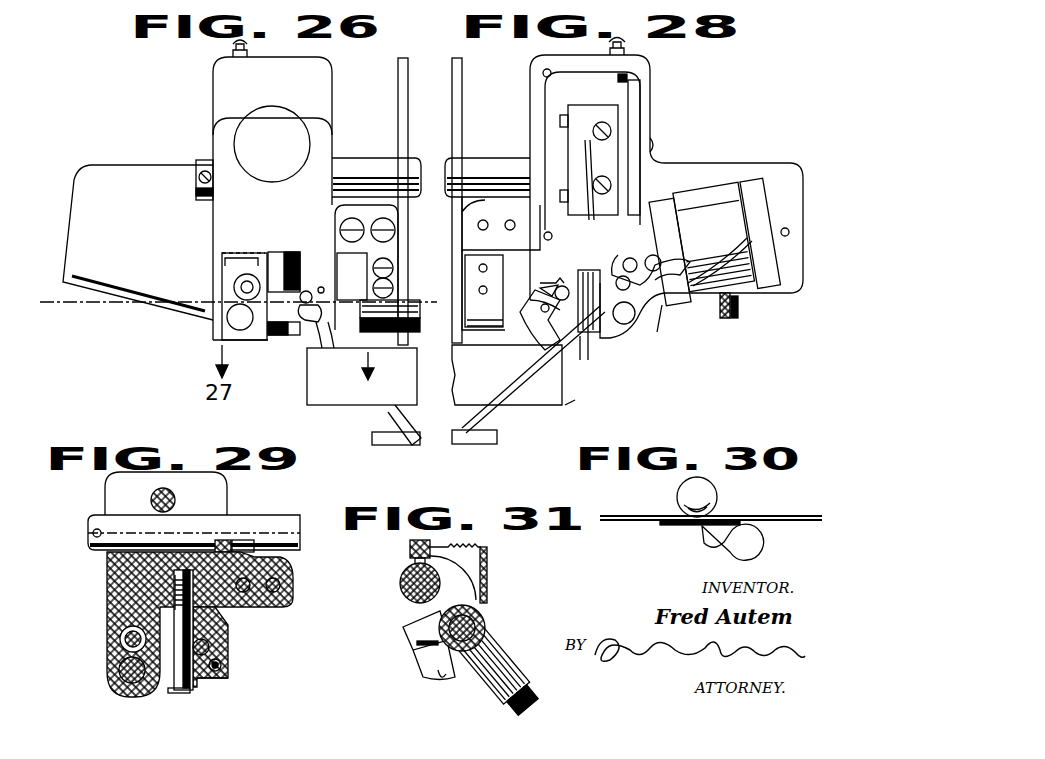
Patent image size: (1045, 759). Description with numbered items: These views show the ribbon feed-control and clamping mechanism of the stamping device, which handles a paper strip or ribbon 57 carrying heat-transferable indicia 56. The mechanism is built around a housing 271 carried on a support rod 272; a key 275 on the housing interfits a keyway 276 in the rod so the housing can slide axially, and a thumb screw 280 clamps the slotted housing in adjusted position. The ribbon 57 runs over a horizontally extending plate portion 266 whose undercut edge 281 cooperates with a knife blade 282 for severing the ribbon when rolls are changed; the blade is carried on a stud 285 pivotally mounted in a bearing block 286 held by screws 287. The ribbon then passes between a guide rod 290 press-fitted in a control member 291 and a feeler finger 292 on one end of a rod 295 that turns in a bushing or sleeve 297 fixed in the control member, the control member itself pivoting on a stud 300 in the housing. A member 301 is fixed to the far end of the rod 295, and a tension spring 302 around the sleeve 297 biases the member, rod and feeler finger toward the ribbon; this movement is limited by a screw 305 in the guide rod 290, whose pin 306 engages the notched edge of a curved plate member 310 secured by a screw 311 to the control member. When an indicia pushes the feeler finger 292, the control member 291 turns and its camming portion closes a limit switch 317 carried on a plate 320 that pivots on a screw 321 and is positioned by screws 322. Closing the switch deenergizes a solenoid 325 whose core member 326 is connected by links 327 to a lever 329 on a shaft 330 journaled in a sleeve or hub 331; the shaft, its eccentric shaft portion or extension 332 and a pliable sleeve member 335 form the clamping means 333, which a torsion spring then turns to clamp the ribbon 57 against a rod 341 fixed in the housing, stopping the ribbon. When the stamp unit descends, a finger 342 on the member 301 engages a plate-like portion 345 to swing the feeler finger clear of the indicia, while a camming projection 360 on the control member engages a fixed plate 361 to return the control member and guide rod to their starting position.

In FIG. 30, the indicia 56 is at (667, 525).
In FIG. 26, the paper strip or ribbon 57 is at (100, 305).
In FIG. 30, the paper strip or ribbon 57 is at (782, 517).
In FIG. 26, the plate portion 266 is at (398, 292).
In FIG. 26, the housing 271 is at (213, 95).
In FIG. 28, the housing 271 is at (650, 72).
In FIG. 29, the housing 271 is at (107, 594).
In FIG. 26, the support rod 272 is at (360, 158).
In FIG. 28, the support rod 272 is at (492, 158).
In FIG. 29, the support rod 272 is at (88, 536).
In FIG. 29, the key 275 is at (222, 540).
In FIG. 29, the keyway 276 is at (248, 540).
In FIG. 26, the thumb screw 280 is at (300, 113).
In FIG. 29, the thumb screw 280 is at (150, 497).
In FIG. 26, the undercut edge 281 is at (395, 300).
In FIG. 26, the knife blade 282 is at (398, 110).
In FIG. 28, the knife blade 282 is at (462, 80).
In FIG. 26, the stud 285 is at (358, 312).
In FIG. 28, the stud 285 is at (500, 350).
In FIG. 26, the bearing block 286 is at (385, 366).
In FIG. 28, the bearing block 286 is at (465, 270).
In FIG. 26, the screws 287 is at (372, 267).
In FIG. 28, the screws 287 is at (484, 291).
In FIG. 26, the guide rod 290 is at (308, 291).
In FIG. 28, the guide rod 290 is at (566, 300).
In FIG. 29, the guide rod 290 is at (208, 640).
In FIG. 31, the guide rod 290 is at (400, 586).
In FIG. 30, the guide rod 290 is at (718, 497).
In FIG. 26, the control member 291 is at (284, 262).
In FIG. 29, the control member 291 is at (225, 680).
In FIG. 26, the feeler finger 292 is at (305, 340).
In FIG. 30, the feeler finger 292 is at (714, 550).
In FIG. 29, the rod 295 is at (225, 670).
In FIG. 31, the rod 295 is at (470, 628).
In FIG. 29, the bushing or sleeve 297 is at (222, 662).
In FIG. 31, the bushing or sleeve 297 is at (470, 618).
In FIG. 26, the stud 300 is at (278, 337).
In FIG. 28, the stud 300 is at (588, 335).
In FIG. 29, the stud 300 is at (192, 688).
In FIG. 28, the member 301 is at (540, 355).
In FIG. 31, the member 301 is at (410, 660).
In FIG. 31, the tension spring 302 is at (442, 678).
In FIG. 31, the screw 305 is at (410, 543).
In FIG. 28, the pin 306 is at (546, 282).
In FIG. 31, the pin 306 is at (458, 545).
In FIG. 28, the curved plate member 310 is at (542, 290).
In FIG. 31, the curved plate member 310 is at (487, 568).
In FIG. 29, the screw 311 is at (216, 647).
In FIG. 28, the limit switch 317 is at (614, 108).
In FIG. 28, the plate 320 is at (632, 98).
In FIG. 26, the screw 321 is at (211, 155).
In FIG. 28, the screw 321 is at (652, 140).
In FIG. 26, the screws 322 is at (236, 45).
In FIG. 28, the screws 322 is at (625, 42).
In FIG. 28, the solenoid 325 is at (768, 282).
In FIG. 28, the core member 326 is at (672, 308).
In FIG. 28, the links 327 is at (658, 318).
In FIG. 28, the lever 329 is at (628, 300).
In FIG. 29, the shaft 330 is at (126, 638).
In FIG. 26, the sleeve or hub 331 is at (235, 278).
In FIG. 29, the sleeve or hub 331 is at (125, 630).
In FIG. 26, the shaft portion or extension 332 is at (236, 284).
In FIG. 26, the clamping means 333 is at (240, 258).
In FIG. 26, the sleeve member 335 is at (240, 294).
In FIG. 26, the rod 341 is at (228, 322).
In FIG. 28, the rod 341 is at (636, 322).
In FIG. 29, the rod 341 is at (120, 670).
In FIG. 26, the finger 342 is at (410, 432).
In FIG. 28, the finger 342 is at (470, 418).
In FIG. 31, the finger 342 is at (508, 700).
In FIG. 26, the plate-like portion 345 is at (372, 440).
In FIG. 28, the plate-like portion 345 is at (497, 437).
In FIG. 26, the camming projection 360 is at (320, 352).
In FIG. 28, the camming projection 360 is at (585, 362).
In FIG. 26, the plate 361 is at (307, 398).
In FIG. 28, the plate 361 is at (568, 405).